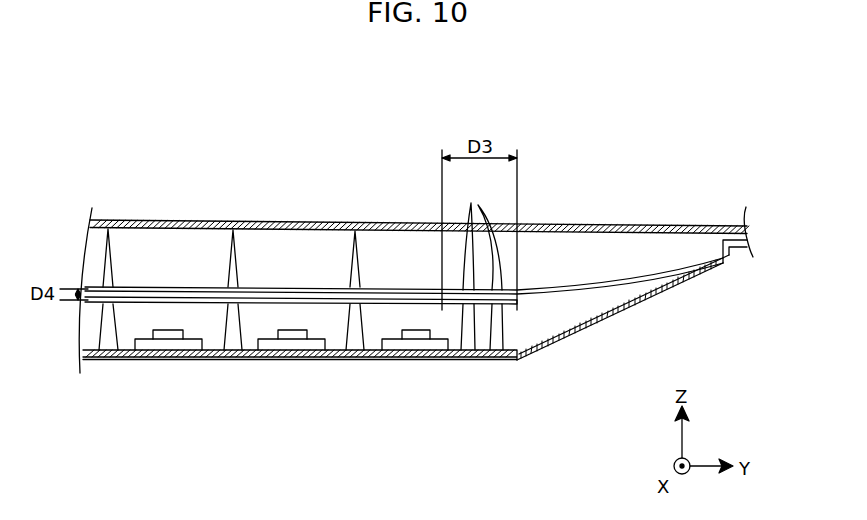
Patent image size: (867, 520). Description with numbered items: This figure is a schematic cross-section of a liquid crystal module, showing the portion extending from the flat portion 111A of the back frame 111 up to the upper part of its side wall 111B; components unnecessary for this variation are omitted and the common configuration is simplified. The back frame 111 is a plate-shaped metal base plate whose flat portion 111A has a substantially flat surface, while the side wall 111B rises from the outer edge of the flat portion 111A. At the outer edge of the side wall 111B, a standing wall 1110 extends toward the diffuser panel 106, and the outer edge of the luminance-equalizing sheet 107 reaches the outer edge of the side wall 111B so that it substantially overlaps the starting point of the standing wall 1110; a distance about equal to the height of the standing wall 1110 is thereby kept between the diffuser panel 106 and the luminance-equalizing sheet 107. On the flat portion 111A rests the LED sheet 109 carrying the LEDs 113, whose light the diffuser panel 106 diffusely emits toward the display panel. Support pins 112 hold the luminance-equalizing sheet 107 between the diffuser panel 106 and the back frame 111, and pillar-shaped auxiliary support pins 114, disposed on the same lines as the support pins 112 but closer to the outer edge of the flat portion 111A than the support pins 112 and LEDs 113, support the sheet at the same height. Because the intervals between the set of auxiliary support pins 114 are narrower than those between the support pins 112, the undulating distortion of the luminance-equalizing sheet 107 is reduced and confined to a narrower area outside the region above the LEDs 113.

The diffuser panel 106 is at (338, 222).
The luminance-equalizing sheet 107 is at (552, 292).
The LED sheet 109 is at (325, 343).
The back frame 111 is at (425, 346).
The flat portion 111A is at (517, 359).
The side wall 111B is at (768, 303).
The standing wall 1110 is at (731, 274).
The support pins 112 is at (228, 287).
The LEDs 113 is at (280, 338).
The auxiliary support pins 114 is at (481, 265).